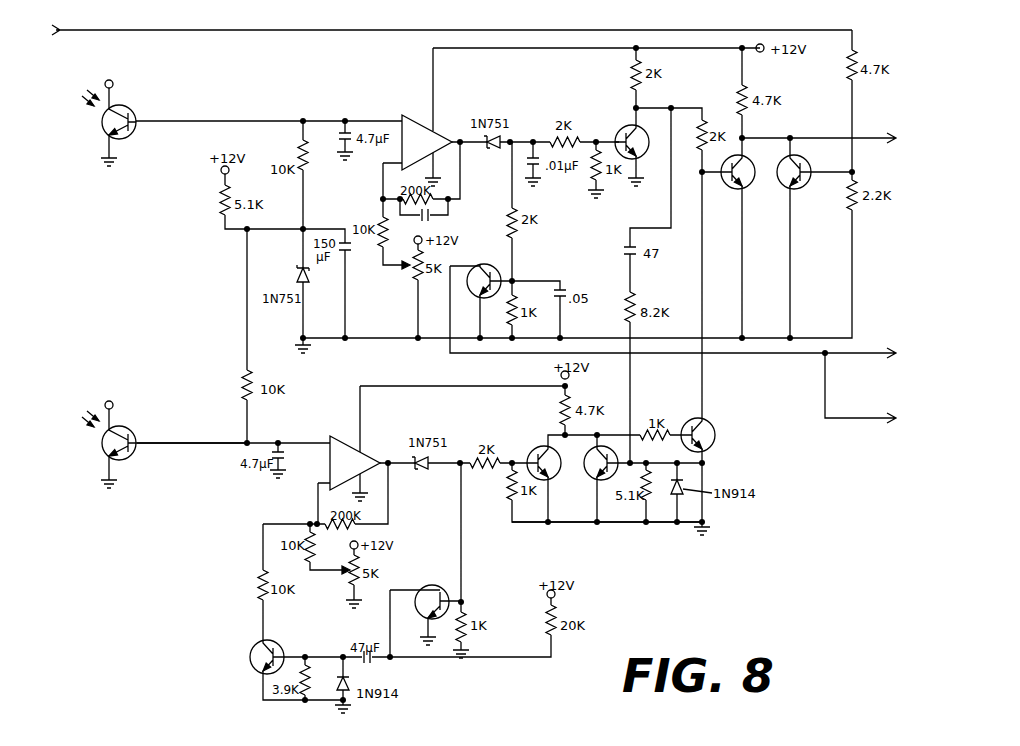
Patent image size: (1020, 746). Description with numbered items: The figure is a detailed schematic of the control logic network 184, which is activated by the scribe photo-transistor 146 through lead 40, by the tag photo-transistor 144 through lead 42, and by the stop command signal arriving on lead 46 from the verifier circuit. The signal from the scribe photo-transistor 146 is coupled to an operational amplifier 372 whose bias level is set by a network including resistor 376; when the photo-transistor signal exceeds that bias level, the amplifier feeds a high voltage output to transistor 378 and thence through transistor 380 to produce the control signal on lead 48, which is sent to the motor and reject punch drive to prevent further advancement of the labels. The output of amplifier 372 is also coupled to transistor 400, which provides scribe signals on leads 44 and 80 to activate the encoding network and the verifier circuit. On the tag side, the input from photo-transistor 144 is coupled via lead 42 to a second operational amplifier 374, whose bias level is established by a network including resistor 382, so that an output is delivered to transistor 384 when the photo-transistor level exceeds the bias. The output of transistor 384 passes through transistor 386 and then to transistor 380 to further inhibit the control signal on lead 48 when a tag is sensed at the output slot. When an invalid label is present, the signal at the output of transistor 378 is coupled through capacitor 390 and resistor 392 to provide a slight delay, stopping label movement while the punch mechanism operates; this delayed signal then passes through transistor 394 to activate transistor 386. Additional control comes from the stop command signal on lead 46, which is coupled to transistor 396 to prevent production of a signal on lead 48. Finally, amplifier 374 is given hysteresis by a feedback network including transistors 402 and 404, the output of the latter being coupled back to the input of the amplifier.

The lead 46 is at (442, 19).
The scribe photo-transistor 146 is at (129, 105).
The lead 40 is at (186, 118).
The operational amplifier 372 is at (416, 115).
The transistor 378 is at (628, 127).
The lead 48 is at (827, 127).
The transistor 380 is at (750, 186).
The transistor 396 is at (806, 186).
The resistor 376 is at (413, 280).
The transistor 400 is at (487, 264).
The capacitor 390 is at (624, 245).
The resistor 392 is at (626, 300).
The lead 44 is at (680, 312).
The lead 80 is at (873, 388).
The tag photo-transistor 144 is at (131, 432).
The lead 42 is at (179, 442).
The second operational amplifier 374 is at (340, 437).
The transistor 384 is at (546, 446).
The transistor 386 is at (710, 428).
The transistor 394 is at (590, 478).
The resistor 382 is at (350, 583).
The transistor 402 is at (436, 572).
The transistor 404 is at (281, 650).
The control logic network 184 is at (768, 528).